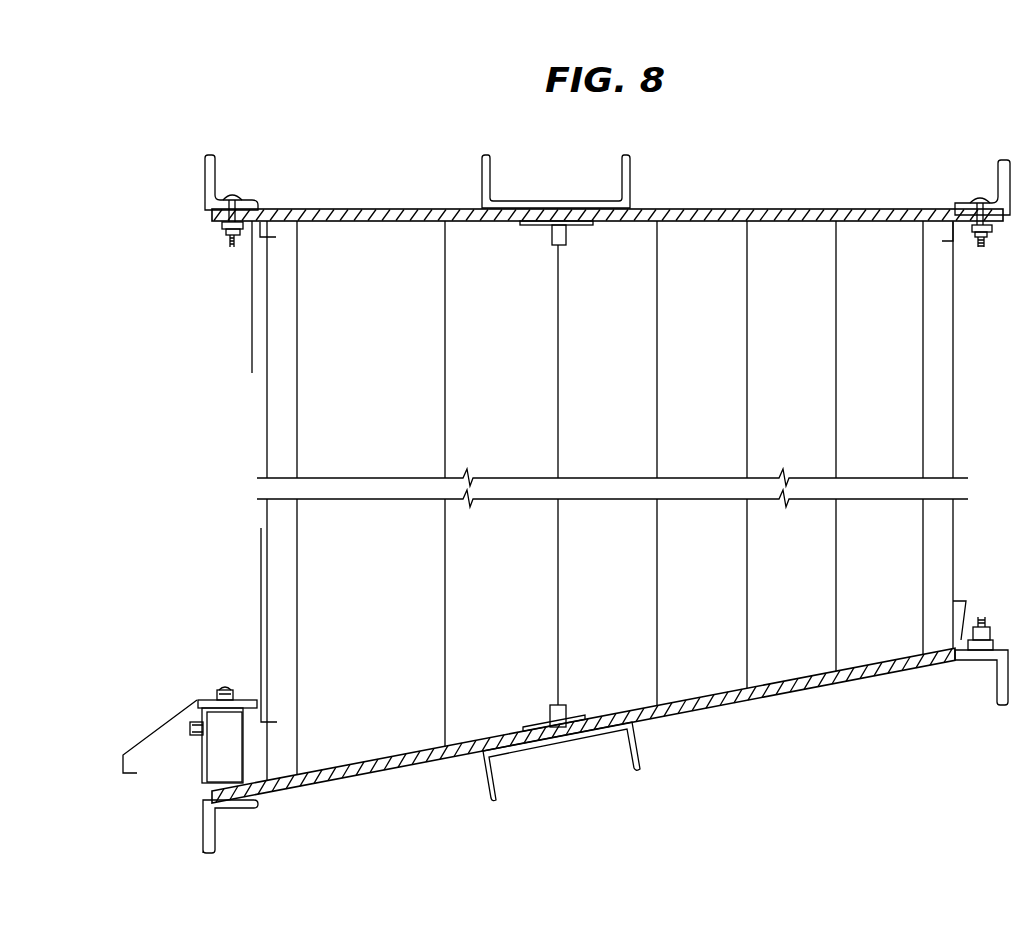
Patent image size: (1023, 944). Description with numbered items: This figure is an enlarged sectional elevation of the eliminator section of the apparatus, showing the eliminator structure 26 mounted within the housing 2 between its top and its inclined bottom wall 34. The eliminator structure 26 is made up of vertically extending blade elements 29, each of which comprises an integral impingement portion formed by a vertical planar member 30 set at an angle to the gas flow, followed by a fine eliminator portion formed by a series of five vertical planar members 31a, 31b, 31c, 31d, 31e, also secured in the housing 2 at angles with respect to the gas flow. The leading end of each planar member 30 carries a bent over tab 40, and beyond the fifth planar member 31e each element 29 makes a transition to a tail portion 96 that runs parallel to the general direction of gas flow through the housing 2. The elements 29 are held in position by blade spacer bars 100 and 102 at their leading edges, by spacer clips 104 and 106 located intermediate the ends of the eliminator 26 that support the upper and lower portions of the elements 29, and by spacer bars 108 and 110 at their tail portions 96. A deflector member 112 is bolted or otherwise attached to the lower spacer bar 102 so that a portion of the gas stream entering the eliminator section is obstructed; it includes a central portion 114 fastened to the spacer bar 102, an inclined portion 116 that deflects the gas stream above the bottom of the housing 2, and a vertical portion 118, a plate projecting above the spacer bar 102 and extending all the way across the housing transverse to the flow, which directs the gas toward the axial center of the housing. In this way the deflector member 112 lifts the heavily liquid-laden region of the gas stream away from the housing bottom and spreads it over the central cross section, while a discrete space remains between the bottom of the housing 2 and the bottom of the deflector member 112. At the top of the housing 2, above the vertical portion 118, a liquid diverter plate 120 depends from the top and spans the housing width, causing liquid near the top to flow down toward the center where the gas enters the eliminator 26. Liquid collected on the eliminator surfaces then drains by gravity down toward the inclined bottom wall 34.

The housing 2 is at (338, 208).
The eliminator structure 26 is at (790, 203).
The elements 29 is at (968, 402).
The vertical planar member 30 is at (370, 353).
The vertical planar member 31a is at (521, 355).
The vertical planar member 31b is at (626, 355).
The vertical planar member 31c is at (718, 355).
The vertical planar member 31d is at (808, 355).
The vertical planar member 31e is at (896, 355).
The inclined bottom wall 34 is at (745, 690).
The bent over tab 40 is at (270, 426).
The tail portion 96 is at (947, 303).
The blade spacer bar 100 is at (277, 237).
The blade spacer bar 102 is at (277, 721).
The spacer clip 104 is at (551, 238).
The spacer clip 106 is at (551, 715).
The spacer bar 108 is at (940, 240).
The spacer bar 110 is at (937, 600).
The deflector member 112 is at (170, 699).
The central portion 114 is at (245, 700).
The inclined portion 116 is at (145, 738).
The vertical portion 118 is at (260, 600).
The liquid diverter plate 120 is at (249, 300).